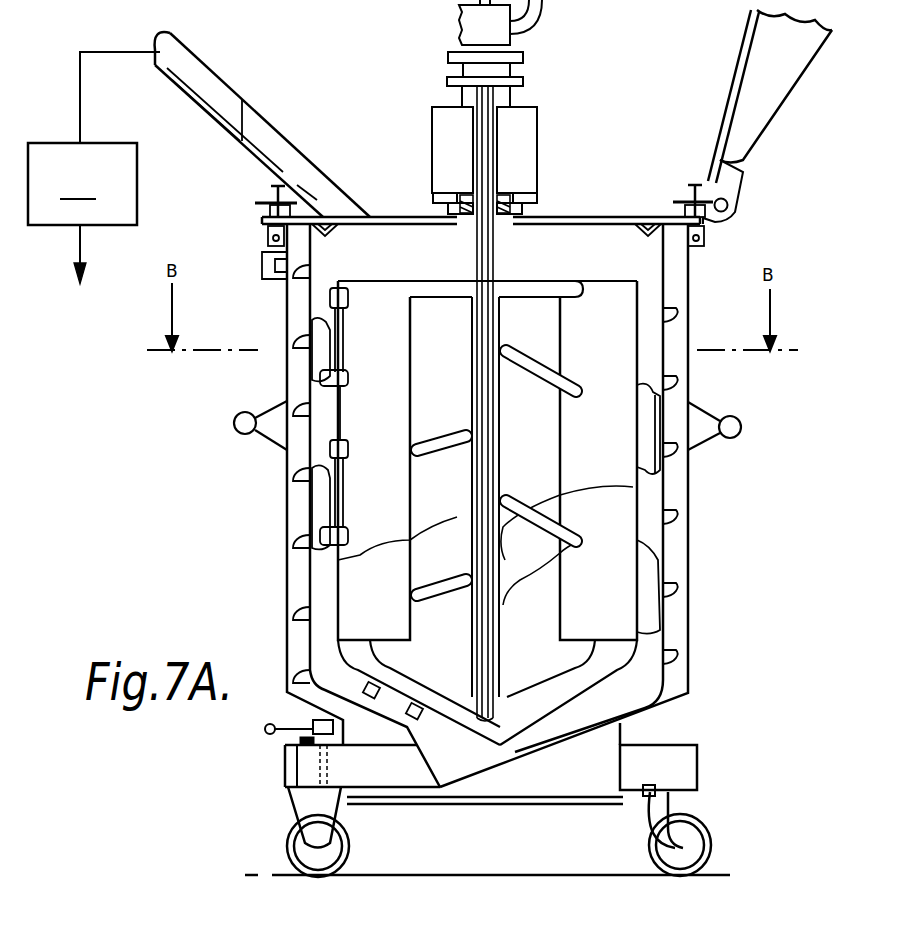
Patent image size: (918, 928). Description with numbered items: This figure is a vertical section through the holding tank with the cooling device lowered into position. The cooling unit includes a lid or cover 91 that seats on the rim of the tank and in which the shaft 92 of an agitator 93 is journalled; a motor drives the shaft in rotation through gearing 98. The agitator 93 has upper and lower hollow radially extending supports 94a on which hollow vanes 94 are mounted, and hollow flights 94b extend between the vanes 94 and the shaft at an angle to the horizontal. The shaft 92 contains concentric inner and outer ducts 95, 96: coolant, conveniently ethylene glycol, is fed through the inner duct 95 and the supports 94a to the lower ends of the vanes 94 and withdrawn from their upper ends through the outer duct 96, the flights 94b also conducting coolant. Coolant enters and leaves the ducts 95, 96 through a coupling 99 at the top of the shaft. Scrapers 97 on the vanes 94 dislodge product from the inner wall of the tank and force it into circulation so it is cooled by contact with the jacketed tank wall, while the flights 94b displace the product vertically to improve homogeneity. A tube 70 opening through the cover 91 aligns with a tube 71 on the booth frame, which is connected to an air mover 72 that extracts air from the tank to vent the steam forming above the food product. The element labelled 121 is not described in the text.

The tube 70 is at (268, 143).
The tube 71 is at (215, 97).
The air mover 72 is at (94, 168).
The lid or cover 91 is at (607, 213).
The shaft 92 is at (473, 248).
The agitator 93 is at (613, 263).
The hollow vanes 94 is at (607, 370).
The radially extending supports 94a is at (527, 287).
The hollow flights 94b is at (633, 487).
The inner duct 95 is at (500, 603).
The outer duct 96 is at (482, 267).
The scrapers 97 is at (322, 510).
The gearing 98 is at (518, 127).
The coupling 99 is at (470, 18).
The handle 121 is at (237, 436).